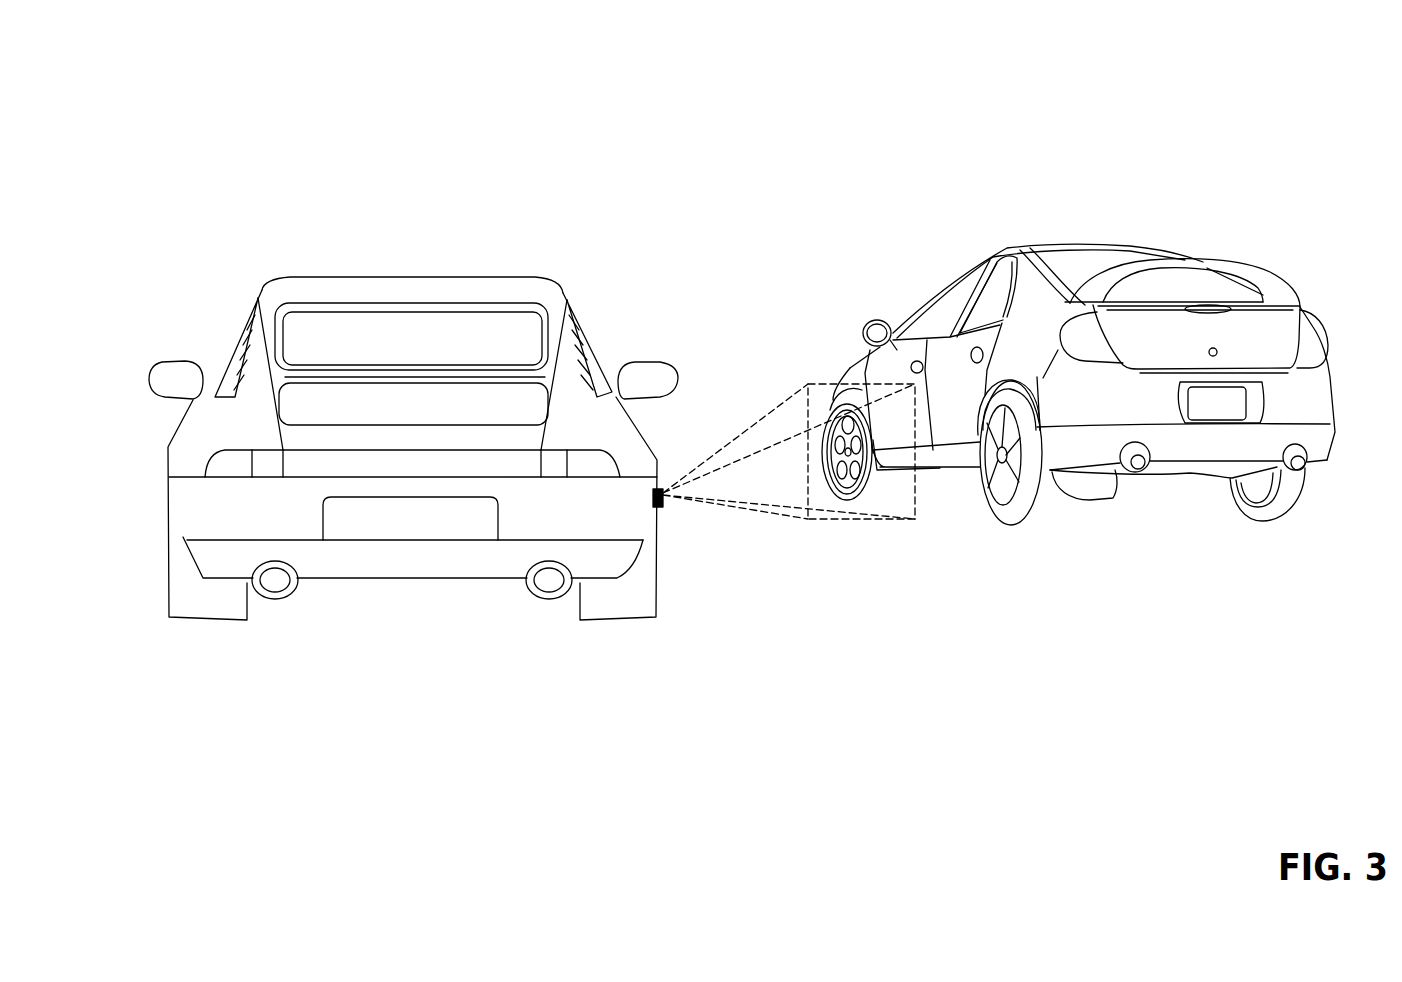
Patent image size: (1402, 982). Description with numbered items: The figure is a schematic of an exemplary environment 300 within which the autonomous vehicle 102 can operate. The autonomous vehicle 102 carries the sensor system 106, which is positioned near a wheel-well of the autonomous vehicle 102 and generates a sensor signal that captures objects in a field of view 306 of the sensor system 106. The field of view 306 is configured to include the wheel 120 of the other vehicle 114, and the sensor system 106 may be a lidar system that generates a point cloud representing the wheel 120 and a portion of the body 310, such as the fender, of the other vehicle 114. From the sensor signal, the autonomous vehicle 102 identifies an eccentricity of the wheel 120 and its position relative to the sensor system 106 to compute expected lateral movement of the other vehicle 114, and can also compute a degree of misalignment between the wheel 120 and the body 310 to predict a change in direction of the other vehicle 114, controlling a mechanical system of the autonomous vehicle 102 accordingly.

The environment 300 is at (300, 72).
The autonomous vehicle 102 is at (260, 292).
The sensor system 106 is at (660, 507).
The field of view 306 is at (760, 453).
The wheel 120 is at (850, 397).
The body 310 is at (883, 470).
The other vehicle 114 is at (1128, 247).